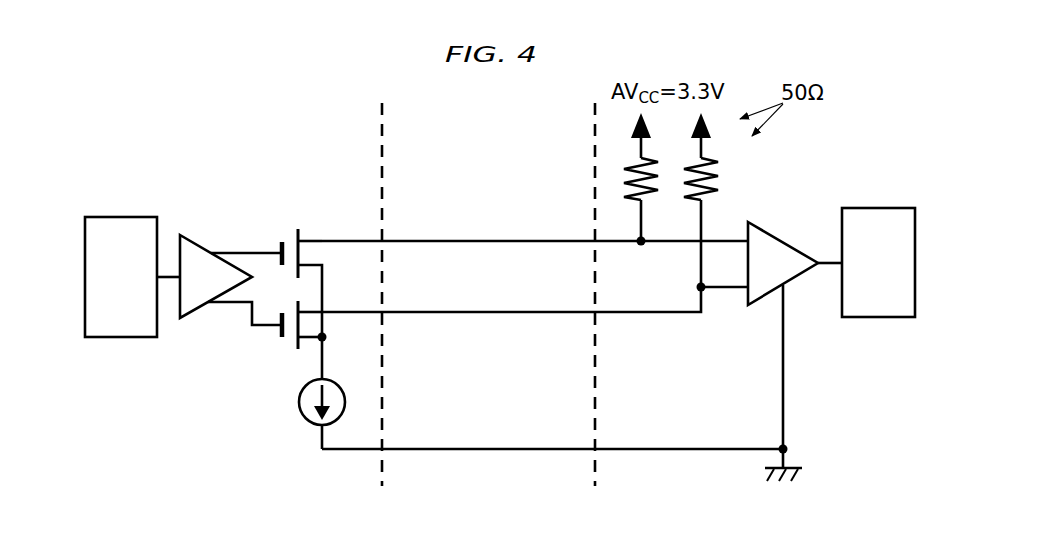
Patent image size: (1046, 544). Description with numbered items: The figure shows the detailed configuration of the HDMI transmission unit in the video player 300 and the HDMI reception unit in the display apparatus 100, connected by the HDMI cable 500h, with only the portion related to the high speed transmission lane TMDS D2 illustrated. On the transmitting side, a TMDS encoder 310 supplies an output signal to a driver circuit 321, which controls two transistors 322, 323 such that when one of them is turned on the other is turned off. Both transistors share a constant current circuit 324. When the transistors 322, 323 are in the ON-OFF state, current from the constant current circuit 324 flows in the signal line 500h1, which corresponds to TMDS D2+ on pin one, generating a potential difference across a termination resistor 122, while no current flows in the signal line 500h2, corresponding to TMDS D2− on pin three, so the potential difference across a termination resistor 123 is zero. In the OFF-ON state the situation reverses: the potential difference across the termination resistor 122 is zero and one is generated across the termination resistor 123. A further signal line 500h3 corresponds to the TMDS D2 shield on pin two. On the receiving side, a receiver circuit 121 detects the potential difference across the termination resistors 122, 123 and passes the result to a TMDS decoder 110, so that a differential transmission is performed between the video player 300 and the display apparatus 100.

The TMDS encoder 310 is at (141, 252).
The driver circuit 321 is at (231, 298).
The transistor 322 is at (274, 282).
The transistor 323 is at (276, 352).
The constant current circuit 324 is at (325, 420).
The signal line 500h1 is at (535, 267).
The signal line 500h2 is at (535, 325).
The signal line 500h3 is at (552, 424).
The termination resistor 122 is at (602, 179).
The termination resistor 123 is at (735, 202).
The receiver circuit 121 is at (797, 351).
The TMDS decoder 110 is at (899, 248).
The video player 300 is at (380, 502).
The HDMI cable 500h is at (593, 502).
The display apparatus 100 is at (597, 502).